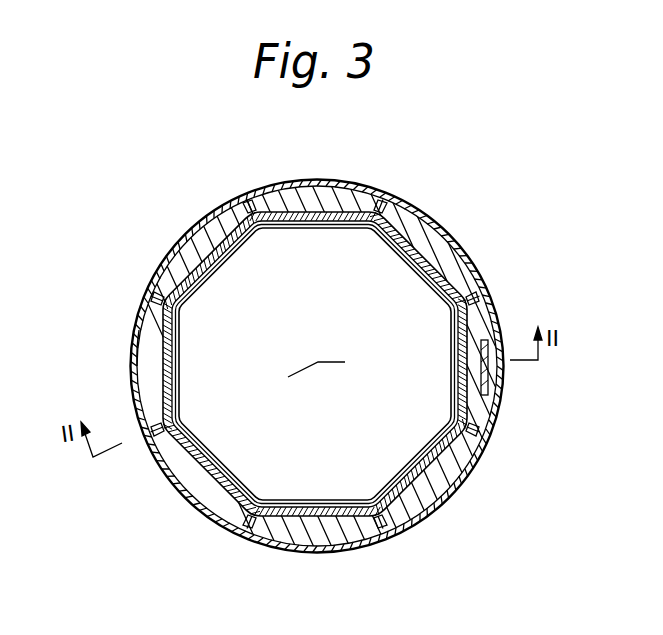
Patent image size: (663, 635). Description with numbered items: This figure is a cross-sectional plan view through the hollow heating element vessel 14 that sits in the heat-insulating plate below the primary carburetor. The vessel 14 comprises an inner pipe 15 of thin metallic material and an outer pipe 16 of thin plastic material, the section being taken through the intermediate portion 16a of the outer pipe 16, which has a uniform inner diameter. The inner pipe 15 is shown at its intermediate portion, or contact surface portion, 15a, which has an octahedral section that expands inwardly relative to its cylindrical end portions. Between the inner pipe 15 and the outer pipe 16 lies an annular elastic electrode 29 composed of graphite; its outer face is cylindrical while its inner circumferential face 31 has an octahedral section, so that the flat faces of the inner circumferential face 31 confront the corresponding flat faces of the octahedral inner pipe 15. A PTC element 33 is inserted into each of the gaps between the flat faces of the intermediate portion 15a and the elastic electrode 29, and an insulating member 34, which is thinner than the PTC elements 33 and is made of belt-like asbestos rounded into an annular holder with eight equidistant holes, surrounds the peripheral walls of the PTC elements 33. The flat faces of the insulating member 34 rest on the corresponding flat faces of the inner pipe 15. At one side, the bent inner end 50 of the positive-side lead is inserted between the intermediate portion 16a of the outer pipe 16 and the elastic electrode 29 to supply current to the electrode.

The hollow heating element vessel 14 is at (462, 233).
The inner pipe 15 is at (181, 393).
The intermediate portion (contact surface portion) 15a is at (183, 355).
The outer pipe 16 is at (165, 246).
The intermediate portion 16a is at (153, 283).
The elastic electrode 29 is at (400, 218).
The inner circumferential face 31 is at (441, 509).
The PTC element 33 is at (177, 248).
The insulating member 34 is at (258, 202).
The inner end of the positive side lead 50 is at (489, 342).